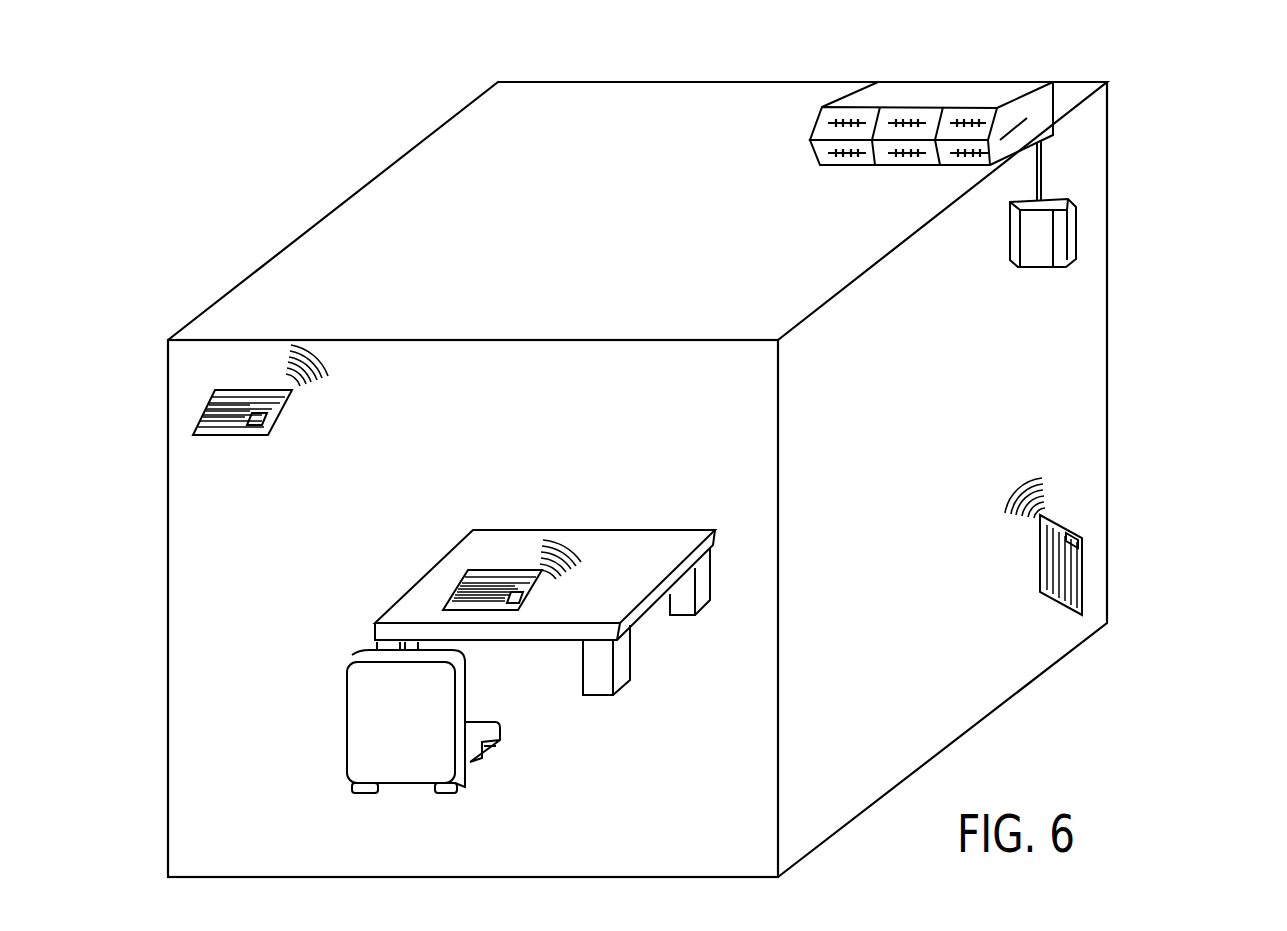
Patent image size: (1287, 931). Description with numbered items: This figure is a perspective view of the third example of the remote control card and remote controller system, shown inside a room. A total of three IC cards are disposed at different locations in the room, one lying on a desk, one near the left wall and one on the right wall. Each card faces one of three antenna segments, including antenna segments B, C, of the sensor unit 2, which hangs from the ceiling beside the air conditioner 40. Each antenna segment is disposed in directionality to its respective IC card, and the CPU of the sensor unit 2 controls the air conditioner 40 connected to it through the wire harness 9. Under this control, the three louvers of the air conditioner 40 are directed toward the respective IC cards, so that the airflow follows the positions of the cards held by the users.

The sensor unit 2 is at (1062, 200).
The wire harness 9 is at (1045, 161).
The air conditioner 40 is at (1003, 92).
The antenna segment B is at (1036, 259).
The antenna segment C is at (1060, 260).